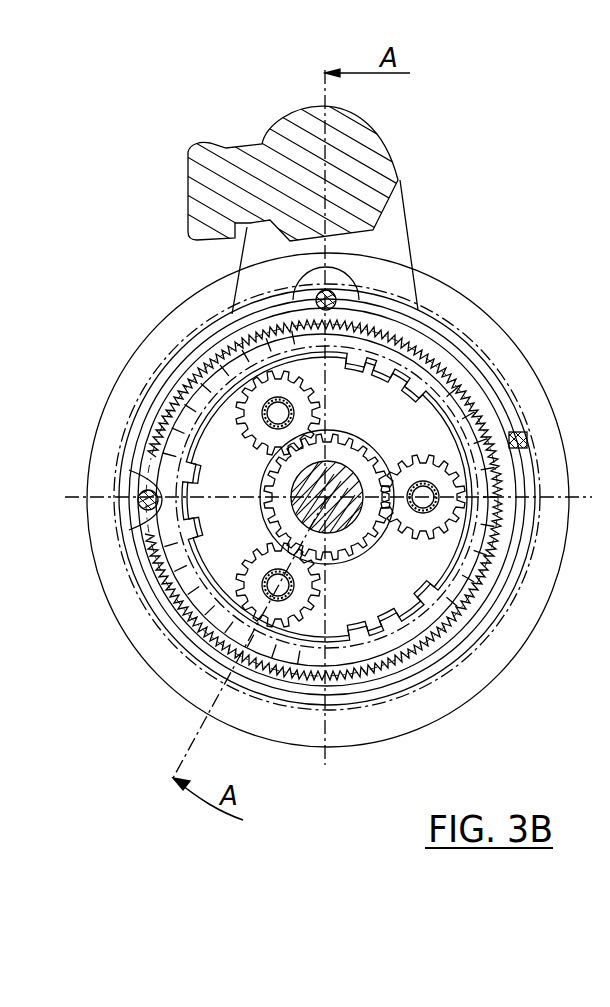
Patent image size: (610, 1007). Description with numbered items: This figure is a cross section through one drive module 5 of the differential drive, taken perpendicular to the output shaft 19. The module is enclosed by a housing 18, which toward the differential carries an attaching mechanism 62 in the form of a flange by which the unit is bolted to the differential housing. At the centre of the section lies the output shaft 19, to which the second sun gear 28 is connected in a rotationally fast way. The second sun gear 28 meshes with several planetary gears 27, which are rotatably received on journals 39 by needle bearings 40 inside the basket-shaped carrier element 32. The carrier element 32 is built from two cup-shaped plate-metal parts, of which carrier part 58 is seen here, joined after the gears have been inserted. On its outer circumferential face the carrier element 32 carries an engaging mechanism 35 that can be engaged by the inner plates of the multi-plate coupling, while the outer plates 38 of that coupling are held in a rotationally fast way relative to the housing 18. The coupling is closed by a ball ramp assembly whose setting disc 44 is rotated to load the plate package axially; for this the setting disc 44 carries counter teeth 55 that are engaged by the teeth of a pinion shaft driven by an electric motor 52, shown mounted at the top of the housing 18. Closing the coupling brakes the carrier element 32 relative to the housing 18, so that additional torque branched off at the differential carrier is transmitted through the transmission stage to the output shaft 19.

The drive module 5 is at (140, 118).
The housing 18 is at (212, 338).
The output shaft 19 is at (340, 532).
The planetary gears 27 is at (315, 398).
The second sun gear 28 is at (352, 449).
The carrier element 32 is at (470, 433).
The engaging mechanism 35 is at (430, 603).
The outer plates 38 is at (511, 410).
The journals 39 is at (408, 533).
The needle bearings 40 is at (318, 602).
The setting disc 44 is at (450, 392).
The electric motor 52 is at (374, 153).
The counter teeth 55 is at (432, 358).
The cup-shaped carrier part 58 is at (327, 497).
The attaching mechanism 62 is at (541, 601).